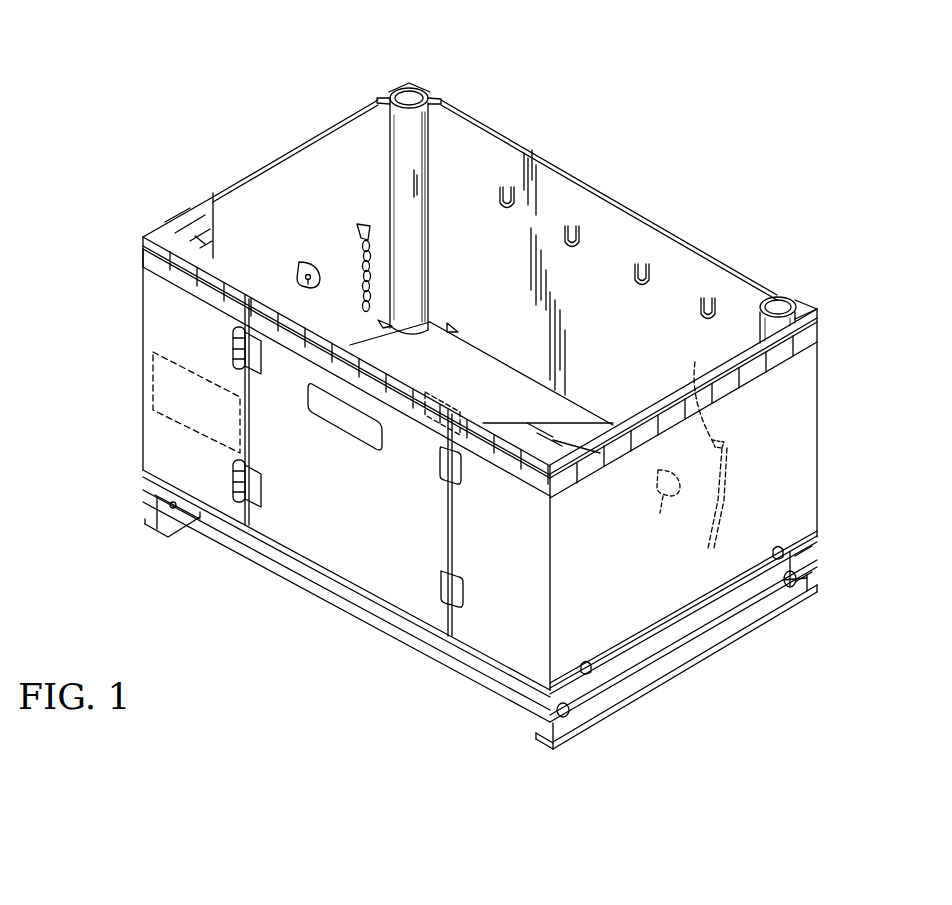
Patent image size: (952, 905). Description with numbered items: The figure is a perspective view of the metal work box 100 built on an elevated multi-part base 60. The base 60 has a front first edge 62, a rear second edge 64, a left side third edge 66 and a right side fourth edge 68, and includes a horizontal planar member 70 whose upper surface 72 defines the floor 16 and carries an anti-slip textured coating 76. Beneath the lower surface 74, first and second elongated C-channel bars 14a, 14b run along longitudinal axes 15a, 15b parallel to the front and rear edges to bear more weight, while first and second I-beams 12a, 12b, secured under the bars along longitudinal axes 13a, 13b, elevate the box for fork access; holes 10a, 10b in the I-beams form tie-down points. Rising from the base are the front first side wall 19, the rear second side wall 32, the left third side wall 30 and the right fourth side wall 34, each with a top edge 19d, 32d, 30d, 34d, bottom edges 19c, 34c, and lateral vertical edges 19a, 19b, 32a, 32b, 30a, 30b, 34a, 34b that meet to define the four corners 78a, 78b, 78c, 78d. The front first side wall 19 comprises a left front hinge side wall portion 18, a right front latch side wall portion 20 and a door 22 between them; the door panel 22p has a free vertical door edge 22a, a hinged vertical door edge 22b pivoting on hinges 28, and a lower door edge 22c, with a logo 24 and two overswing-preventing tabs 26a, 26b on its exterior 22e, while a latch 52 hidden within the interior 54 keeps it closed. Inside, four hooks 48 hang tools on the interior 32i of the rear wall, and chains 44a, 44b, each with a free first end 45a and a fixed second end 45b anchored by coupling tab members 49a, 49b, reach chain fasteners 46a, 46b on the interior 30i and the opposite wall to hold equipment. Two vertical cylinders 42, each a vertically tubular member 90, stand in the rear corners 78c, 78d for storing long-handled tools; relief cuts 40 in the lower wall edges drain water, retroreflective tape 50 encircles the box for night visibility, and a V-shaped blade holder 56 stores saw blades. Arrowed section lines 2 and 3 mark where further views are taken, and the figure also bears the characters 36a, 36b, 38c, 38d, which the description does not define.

The work box 100 is at (772, 147).
The hole 10a is at (567, 716).
The hole 10b is at (798, 588).
The first I-beam 12a is at (150, 505).
The second I-beam 12b is at (817, 594).
The longitudinal axis of first I-beam 13a is at (120, 523).
The longitudinal axis of second I-beam 13b is at (513, 720).
The first elongated C-channel bar 14a is at (418, 636).
The second elongated C-channel bar 14b is at (818, 546).
The longitudinal axis of first C-channel bar 15a is at (280, 598).
The longitudinal axis of second C-channel bar 15b is at (830, 572).
The floor 16 is at (502, 393).
The left front hinge side wall portion 18 is at (150, 420).
The front first side wall 19 is at (157, 310).
The vertical edge of front first side wall 19a is at (71, 310).
The vertical edge of front first side wall 19b is at (550, 620).
The bottom edge of front first side wall 19c is at (218, 510).
The top edge of front first side wall 19d is at (243, 292).
The right front latch side wall portion 20 is at (478, 654).
The door 22 is at (315, 550).
The free vertical door edge 22a is at (448, 535).
The hinged vertical door edge 22b is at (248, 396).
The lower door edge 22c is at (278, 546).
The exterior of door 22e is at (395, 525).
The door panel 22p is at (360, 580).
The company's logo 24 is at (348, 422).
The tab 26a is at (458, 468).
The tab 26b is at (456, 593).
The hinges 28 is at (233, 338).
The left third side wall 30 is at (290, 150).
The front vertical edge of left third side wall 30a is at (147, 443).
The rear vertical edge of left third side wall 30b is at (424, 84).
The top edge of left third side wall 30d is at (215, 191).
The interior of left third side wall 30i is at (304, 205).
The rear second side wall 32 is at (595, 187).
The vertical edge of rear second side wall 32a is at (404, 87).
The vertical edge of rear second side wall 32b is at (818, 407).
The top edge of rear second side wall 32d is at (547, 157).
The interior of rear second side wall 32i is at (481, 213).
The right fourth side wall 34 is at (807, 493).
The front vertical edge of right fourth side wall 34a is at (548, 535).
The rear vertical edge of right fourth side wall 34b is at (818, 447).
The bottom edge of right fourth side wall 34c is at (670, 623).
The top edge of right fourth side wall 34d is at (737, 357).
The corner gusset 36a is at (200, 242).
The corner gusset 36b is at (580, 432).
The corner bracket 38c is at (381, 98).
The corner bracket 38d is at (805, 300).
The relief cut 40 is at (385, 322).
The vertical cylinder 42 is at (430, 93).
The first chain 44a is at (363, 309).
The second chain 44b is at (702, 512).
The free first end 45a is at (313, 332).
The fixed second end 45b is at (367, 226).
The first chain fastener 46a is at (303, 263).
The second chain fastener 46b is at (662, 502).
The hooks 48 is at (565, 245).
The coupling tab member 49a is at (358, 232).
The coupling tab member 49b is at (696, 370).
The retroreflective tape 50 is at (777, 357).
The latch 52 is at (433, 437).
The interior 54 is at (452, 137).
The V-shaped blade holder 56 is at (153, 362).
The elevated multi-part base 60 is at (448, 378).
The front first edge 62 is at (387, 602).
The rear second edge 64 is at (817, 535).
The left side third edge 66 is at (147, 470).
The right side fourth edge 68 is at (757, 578).
The horizontal planar member 70 is at (517, 377).
The upper surface 72 is at (470, 347).
The lower surface 74 is at (720, 598).
The anti-slip textured coating 76 is at (598, 368).
The front first corner 78a is at (145, 272).
The front second corner 78b is at (550, 560).
The rear third corner 78c is at (410, 82).
The rear fourth corner 78d is at (818, 350).
The vertically tubular member 90 is at (393, 138).
The section line 2 is at (757, 443).
The section line 3 is at (257, 423).